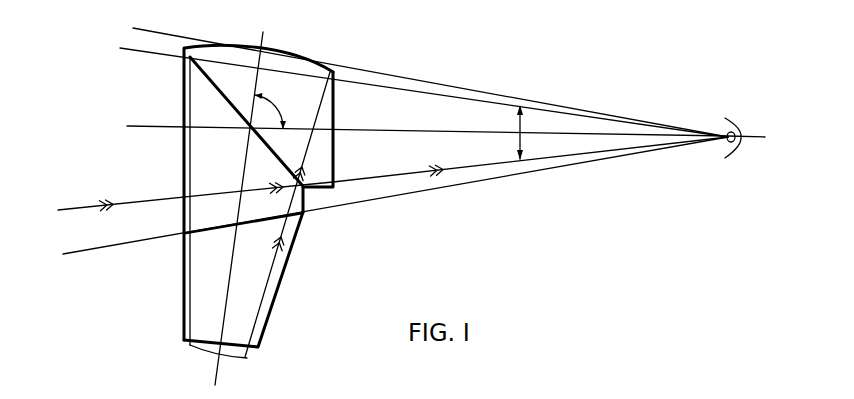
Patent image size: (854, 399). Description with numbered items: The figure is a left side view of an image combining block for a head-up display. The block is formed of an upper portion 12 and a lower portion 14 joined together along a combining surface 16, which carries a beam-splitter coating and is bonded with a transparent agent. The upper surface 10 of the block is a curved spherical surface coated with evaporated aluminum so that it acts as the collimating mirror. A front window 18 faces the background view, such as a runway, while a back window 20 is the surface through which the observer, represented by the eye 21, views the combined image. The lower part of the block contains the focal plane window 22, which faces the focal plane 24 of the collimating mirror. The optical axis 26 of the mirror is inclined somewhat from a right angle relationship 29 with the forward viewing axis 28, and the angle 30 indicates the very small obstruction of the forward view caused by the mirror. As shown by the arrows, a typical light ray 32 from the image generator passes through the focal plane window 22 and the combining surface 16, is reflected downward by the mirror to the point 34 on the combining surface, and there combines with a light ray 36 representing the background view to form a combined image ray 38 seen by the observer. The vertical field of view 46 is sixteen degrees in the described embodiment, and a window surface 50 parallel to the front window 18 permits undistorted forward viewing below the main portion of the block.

The upper surface 10 is at (267, 47).
The upper portion 12 is at (248, 98).
The lower portion 14 is at (229, 178).
The combining surface 16 is at (233, 107).
The front window 18 is at (183, 187).
The back window 20 is at (337, 137).
The eye 21 is at (730, 122).
The focal plane window 22 is at (253, 350).
The focal plane 24 is at (200, 350).
The optical axis 26 is at (260, 41).
The forward viewing axis 28 is at (147, 126).
The right angle relationship 29 is at (268, 95).
The angle 30 is at (379, 96).
The light ray 32 is at (267, 290).
The point 34 is at (306, 182).
The light ray 36 is at (67, 209).
The combined image ray 38 is at (411, 170).
The vertical field of view 46 is at (519, 104).
The window surface 50 is at (308, 200).